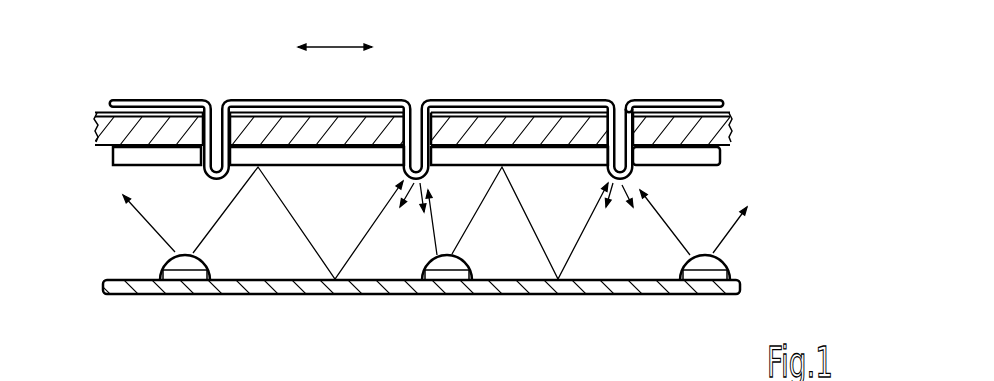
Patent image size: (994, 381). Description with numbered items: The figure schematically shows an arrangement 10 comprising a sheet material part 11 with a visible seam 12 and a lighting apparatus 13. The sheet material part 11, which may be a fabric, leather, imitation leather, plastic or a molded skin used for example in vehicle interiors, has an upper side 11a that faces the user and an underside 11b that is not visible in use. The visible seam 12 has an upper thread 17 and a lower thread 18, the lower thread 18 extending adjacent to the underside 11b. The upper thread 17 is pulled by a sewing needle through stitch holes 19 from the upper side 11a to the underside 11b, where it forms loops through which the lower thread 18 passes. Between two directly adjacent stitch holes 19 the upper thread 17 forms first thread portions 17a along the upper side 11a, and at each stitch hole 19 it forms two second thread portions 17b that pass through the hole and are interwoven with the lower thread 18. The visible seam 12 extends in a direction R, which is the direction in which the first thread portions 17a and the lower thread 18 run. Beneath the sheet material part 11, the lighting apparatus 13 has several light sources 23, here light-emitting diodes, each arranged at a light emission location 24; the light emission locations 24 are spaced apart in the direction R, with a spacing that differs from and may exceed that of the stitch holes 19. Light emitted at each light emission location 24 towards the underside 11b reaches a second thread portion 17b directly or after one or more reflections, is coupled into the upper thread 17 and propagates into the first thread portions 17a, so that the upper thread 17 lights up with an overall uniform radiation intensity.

The arrangement 10 is at (432, 117).
The sheet material part 11 is at (432, 108).
The upper side 11a is at (105, 110).
The underside 11b is at (105, 150).
The visible seam 12 is at (450, 123).
The lighting apparatus 13 is at (775, 247).
The upper thread 17 is at (500, 100).
The first thread portions 17a is at (280, 110).
The second thread portions 17b is at (203, 147).
The lower thread 18 is at (315, 162).
The stitch hole 19 is at (213, 106).
The light source 23 is at (190, 281).
The light emission location 24 is at (148, 257).
The direction R is at (332, 46).